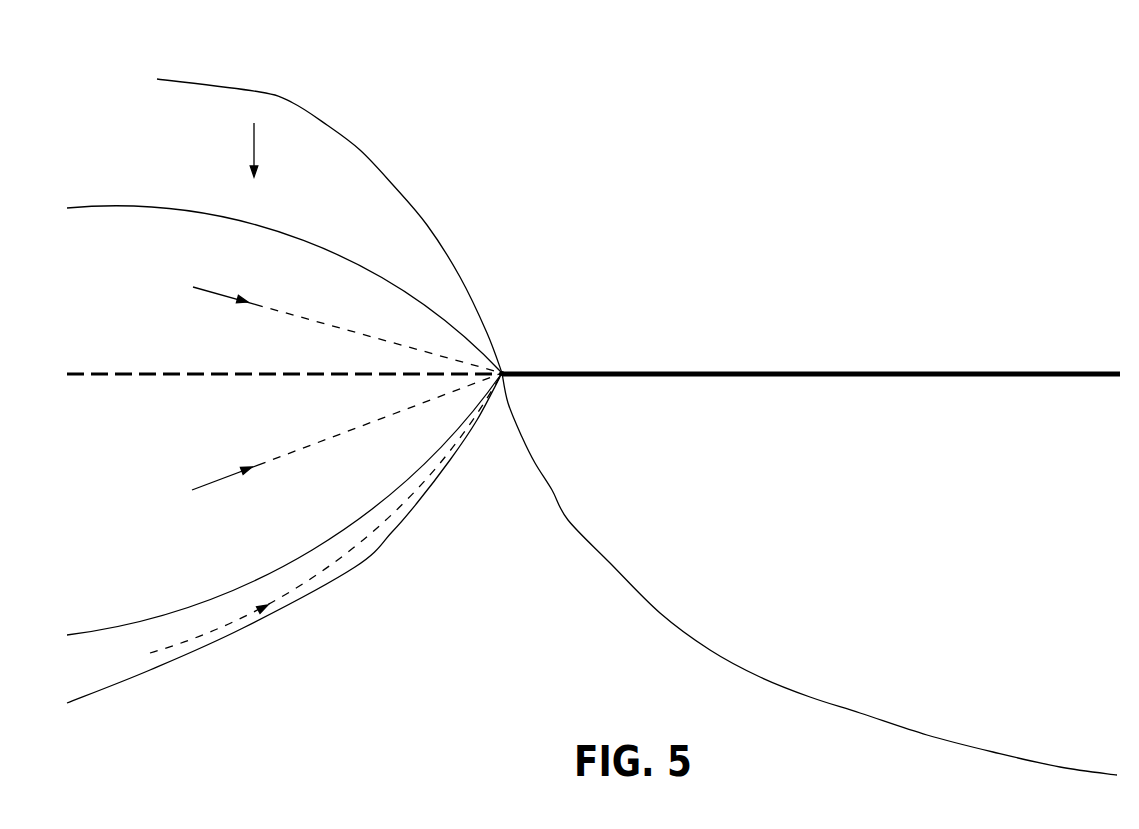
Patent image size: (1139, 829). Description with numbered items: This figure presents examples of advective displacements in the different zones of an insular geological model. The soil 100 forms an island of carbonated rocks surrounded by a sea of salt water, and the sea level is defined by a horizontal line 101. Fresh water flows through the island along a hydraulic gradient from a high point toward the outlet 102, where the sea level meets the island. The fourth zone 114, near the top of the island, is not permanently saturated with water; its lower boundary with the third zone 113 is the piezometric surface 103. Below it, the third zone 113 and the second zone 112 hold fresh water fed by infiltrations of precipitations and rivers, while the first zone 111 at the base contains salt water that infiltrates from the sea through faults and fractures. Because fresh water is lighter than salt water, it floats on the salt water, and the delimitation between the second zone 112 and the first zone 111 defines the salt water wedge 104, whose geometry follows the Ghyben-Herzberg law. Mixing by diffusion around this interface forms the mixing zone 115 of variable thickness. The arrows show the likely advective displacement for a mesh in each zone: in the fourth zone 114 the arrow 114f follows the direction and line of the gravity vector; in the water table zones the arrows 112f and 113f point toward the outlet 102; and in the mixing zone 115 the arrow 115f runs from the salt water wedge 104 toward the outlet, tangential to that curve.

The soil 100 is at (292, 94).
The horizontal line 101 is at (794, 362).
The outlet 102 is at (509, 358).
The piezometric surface 103 is at (82, 203).
The salt water wedge 104 is at (359, 578).
The first zone 111 is at (93, 791).
The second zone 112 is at (95, 539).
The arrow 112f is at (228, 485).
The third zone 113 is at (93, 310).
The arrow 113f is at (218, 303).
The fourth zone 114 is at (197, 163).
The arrow 114f is at (264, 148).
The mixing zone 115 is at (130, 673).
The arrow 115f is at (247, 636).